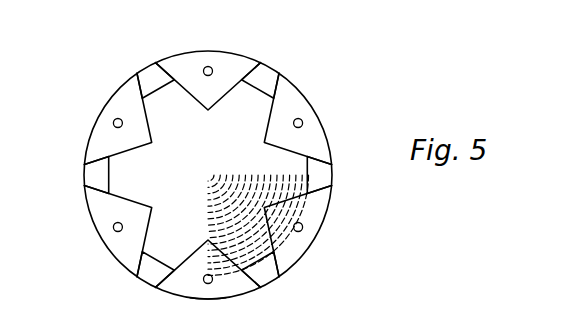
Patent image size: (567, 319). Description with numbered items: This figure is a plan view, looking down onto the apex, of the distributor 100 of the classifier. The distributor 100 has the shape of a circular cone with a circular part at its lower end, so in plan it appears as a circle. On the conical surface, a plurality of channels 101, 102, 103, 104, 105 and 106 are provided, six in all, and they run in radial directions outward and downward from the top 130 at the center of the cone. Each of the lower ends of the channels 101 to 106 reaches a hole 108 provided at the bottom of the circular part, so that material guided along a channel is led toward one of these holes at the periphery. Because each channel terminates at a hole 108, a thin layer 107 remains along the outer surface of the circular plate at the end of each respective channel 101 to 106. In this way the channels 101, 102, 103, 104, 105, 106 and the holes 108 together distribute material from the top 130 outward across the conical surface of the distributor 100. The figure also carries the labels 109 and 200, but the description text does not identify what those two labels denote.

The distributor 100 is at (204, 54).
The channel 101 is at (157, 250).
The channel 102 is at (93, 210).
The channel 103 is at (170, 107).
The channel 104 is at (247, 90).
The channel 105 is at (295, 200).
The channel 106 is at (254, 249).
The thin layer 107 is at (332, 172).
The hole 108 is at (148, 76).
The hole 109 is at (113, 119).
The top 130 is at (207, 177).
The shaft 200 is at (229, 308).